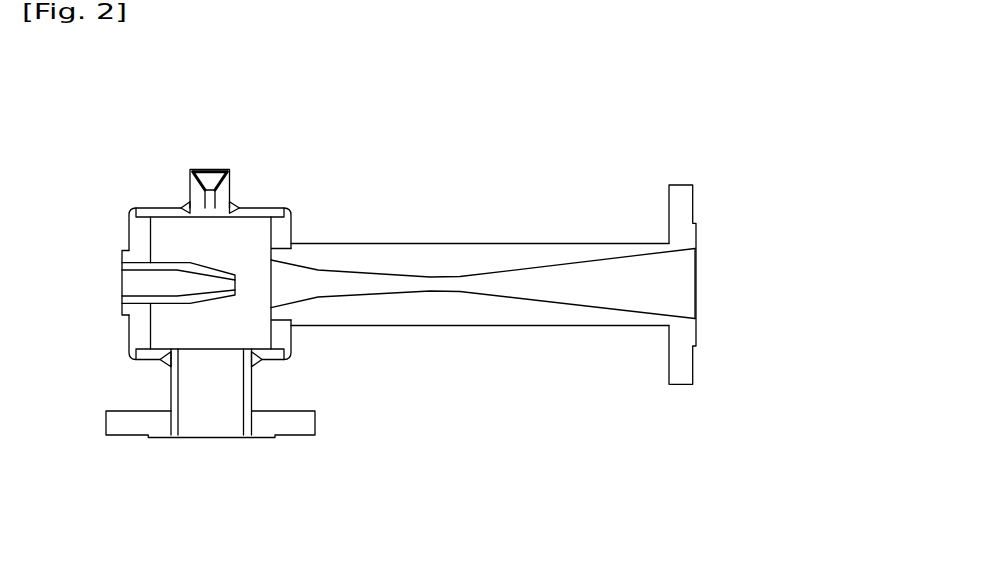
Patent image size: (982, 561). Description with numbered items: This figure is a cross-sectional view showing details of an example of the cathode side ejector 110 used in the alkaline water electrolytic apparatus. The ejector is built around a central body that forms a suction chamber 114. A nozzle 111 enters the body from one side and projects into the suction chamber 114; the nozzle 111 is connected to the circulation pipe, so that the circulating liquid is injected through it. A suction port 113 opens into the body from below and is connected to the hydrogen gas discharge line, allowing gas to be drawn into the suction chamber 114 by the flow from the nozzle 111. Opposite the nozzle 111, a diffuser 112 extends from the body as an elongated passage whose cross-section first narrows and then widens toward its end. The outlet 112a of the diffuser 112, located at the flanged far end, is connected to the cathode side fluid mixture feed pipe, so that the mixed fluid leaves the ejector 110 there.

The cathode side ejector 110 is at (392, 188).
The nozzle 111 is at (185, 262).
The diffuser 112 is at (532, 246).
The outlet 112a is at (699, 277).
The suction port 113 is at (210, 438).
The suction chamber 114 is at (243, 252).